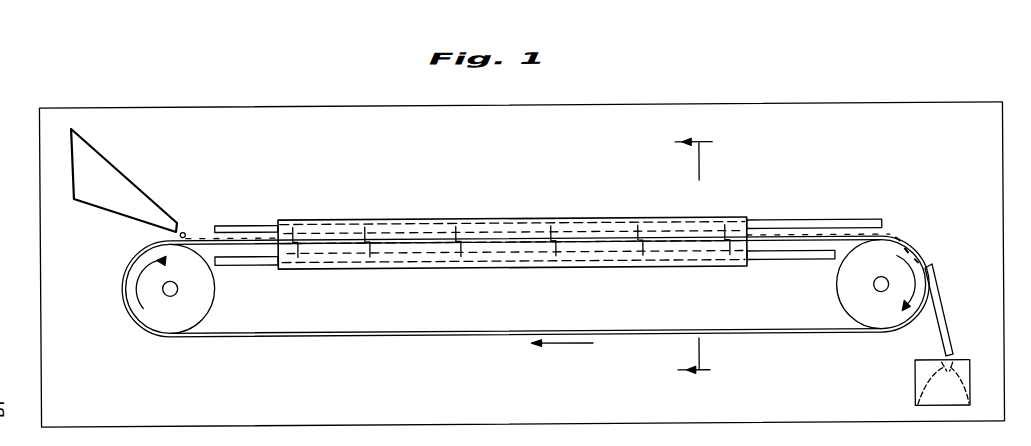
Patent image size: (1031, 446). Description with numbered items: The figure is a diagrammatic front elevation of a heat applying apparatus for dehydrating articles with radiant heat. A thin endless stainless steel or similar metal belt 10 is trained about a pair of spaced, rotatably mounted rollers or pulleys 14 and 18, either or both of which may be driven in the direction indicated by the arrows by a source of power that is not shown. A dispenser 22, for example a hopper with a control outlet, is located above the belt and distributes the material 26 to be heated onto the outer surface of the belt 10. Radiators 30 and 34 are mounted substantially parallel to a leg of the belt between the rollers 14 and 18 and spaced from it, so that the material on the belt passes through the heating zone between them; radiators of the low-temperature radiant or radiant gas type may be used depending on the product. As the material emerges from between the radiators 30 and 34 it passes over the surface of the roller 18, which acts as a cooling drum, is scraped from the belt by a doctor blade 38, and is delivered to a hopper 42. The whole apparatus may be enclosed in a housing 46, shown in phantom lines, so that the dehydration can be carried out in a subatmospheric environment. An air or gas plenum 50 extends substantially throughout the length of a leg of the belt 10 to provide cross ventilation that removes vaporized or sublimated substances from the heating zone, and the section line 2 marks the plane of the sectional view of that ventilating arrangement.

The section line 2- 2 is at (703, 257).
The endless metal belt 10 is at (374, 337).
The roller 14 is at (203, 296).
The cooling drum roller 18 is at (851, 288).
The dispenser 22 is at (137, 190).
The material 26 is at (186, 231).
The radiator 30 is at (242, 261).
The radiator 34 is at (769, 226).
The doctor blade 38 is at (938, 316).
The hopper 42 is at (915, 375).
The housing 46 is at (747, 422).
The air or gas plenum 50 is at (558, 212).